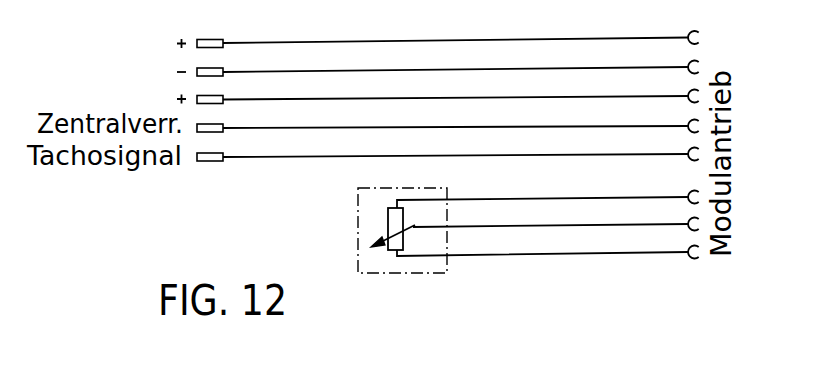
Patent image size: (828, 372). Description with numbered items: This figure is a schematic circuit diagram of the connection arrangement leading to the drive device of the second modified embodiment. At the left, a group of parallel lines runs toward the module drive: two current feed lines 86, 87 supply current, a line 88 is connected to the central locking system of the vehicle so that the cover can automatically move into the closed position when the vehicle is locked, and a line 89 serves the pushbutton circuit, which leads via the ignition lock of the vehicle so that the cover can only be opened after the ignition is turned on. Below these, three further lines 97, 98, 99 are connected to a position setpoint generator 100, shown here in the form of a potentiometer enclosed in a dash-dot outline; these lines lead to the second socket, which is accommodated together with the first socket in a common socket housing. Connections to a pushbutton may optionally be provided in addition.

The current feed line 86 is at (306, 42).
The current feed line 87 is at (353, 71).
The line connected to central locking system 88 is at (313, 128).
The line for pushbutton connection 89 is at (272, 100).
The line 97 is at (498, 200).
The line 98 is at (548, 227).
The line 99 is at (607, 254).
The position setpoint generator 100 is at (389, 232).